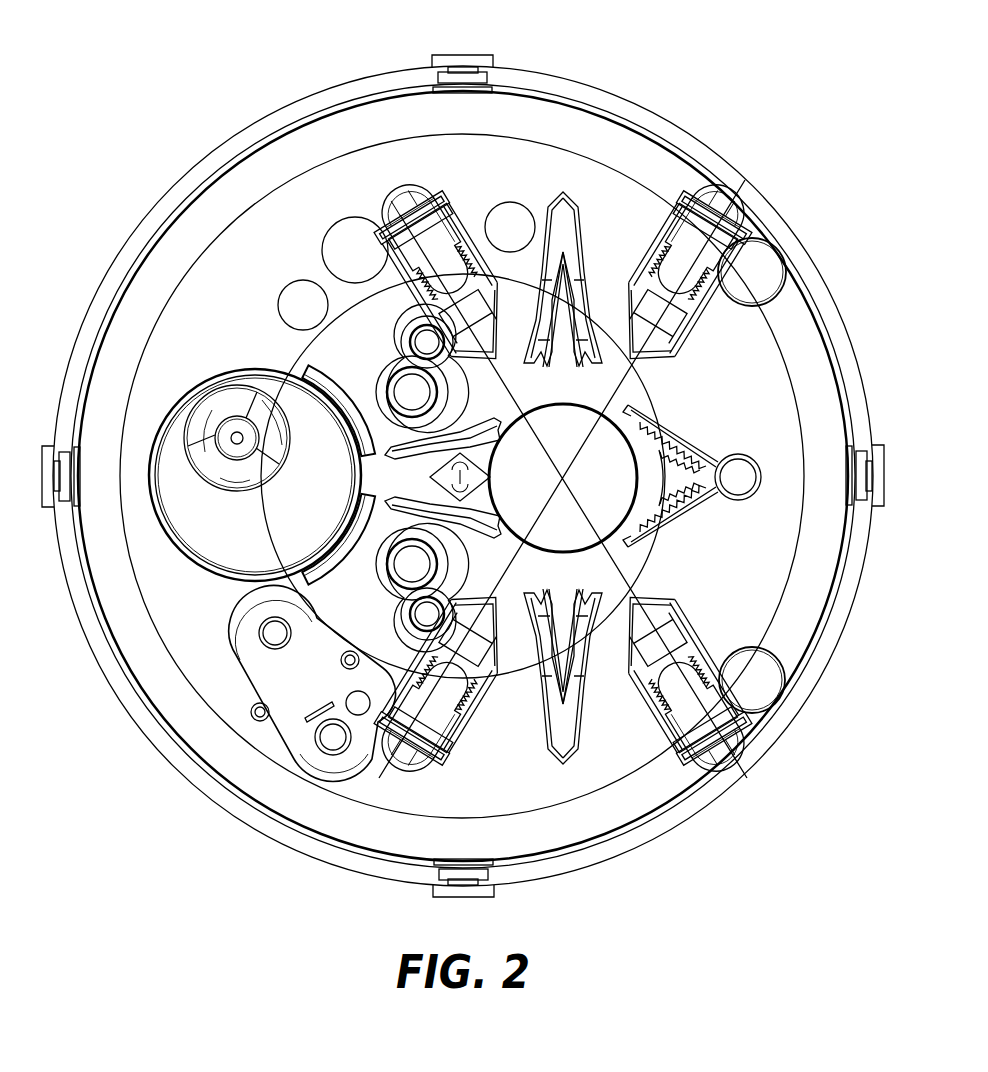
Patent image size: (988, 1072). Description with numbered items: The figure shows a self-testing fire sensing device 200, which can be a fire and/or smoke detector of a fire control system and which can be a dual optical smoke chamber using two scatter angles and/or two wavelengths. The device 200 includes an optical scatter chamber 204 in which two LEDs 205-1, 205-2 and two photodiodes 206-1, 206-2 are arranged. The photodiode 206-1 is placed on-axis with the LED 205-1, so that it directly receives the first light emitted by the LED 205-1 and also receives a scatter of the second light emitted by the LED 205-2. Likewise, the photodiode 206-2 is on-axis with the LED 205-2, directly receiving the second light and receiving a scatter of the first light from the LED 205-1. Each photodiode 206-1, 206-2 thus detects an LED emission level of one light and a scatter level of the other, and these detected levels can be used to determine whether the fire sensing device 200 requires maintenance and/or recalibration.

The self-testing fire sensing device 200 is at (106, 47).
The optical scatter chamber 204 is at (559, 458).
The LED 205-1 is at (745, 180).
The LED 205-2 is at (400, 215).
The photodiode 206-1 is at (379, 778).
The photodiode 206-2 is at (747, 778).